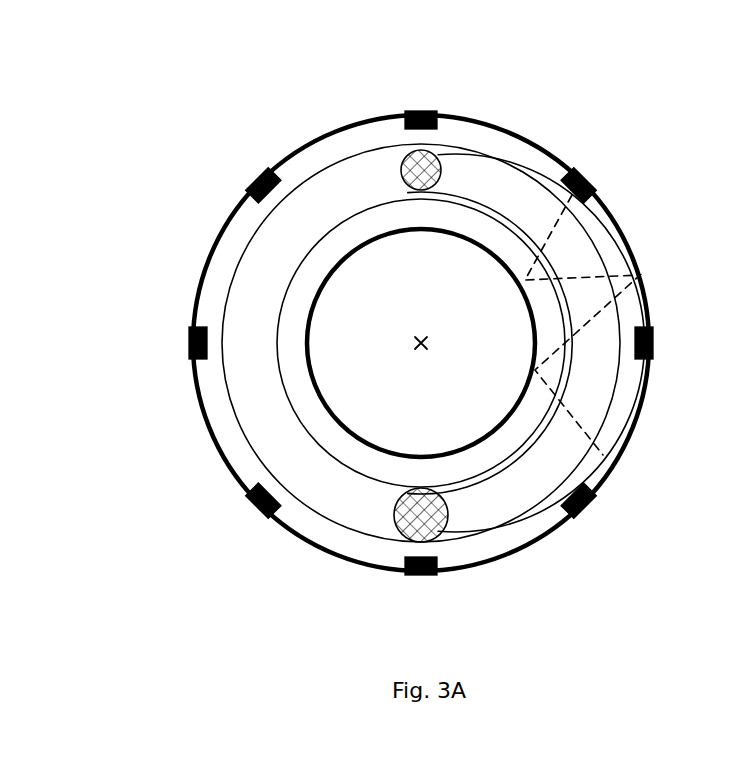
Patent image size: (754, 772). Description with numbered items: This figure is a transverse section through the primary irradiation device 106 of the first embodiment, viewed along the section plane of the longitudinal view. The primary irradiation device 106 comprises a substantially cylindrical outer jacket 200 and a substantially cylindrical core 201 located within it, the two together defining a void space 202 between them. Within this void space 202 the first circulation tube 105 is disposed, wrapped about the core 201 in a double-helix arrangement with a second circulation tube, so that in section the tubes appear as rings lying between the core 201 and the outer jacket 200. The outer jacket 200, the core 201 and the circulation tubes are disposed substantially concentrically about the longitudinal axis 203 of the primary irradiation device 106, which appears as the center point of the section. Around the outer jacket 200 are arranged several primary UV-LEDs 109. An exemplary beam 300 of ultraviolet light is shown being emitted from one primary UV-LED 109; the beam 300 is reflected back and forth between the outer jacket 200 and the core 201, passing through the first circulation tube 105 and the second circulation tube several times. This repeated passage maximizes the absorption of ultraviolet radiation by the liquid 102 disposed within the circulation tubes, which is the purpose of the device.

The primary irradiation device 106 is at (583, 88).
The primary UV-LED 109 is at (421, 110).
The liquid 102 is at (405, 158).
The first circulation tube 105 is at (343, 178).
The outer jacket 200 is at (640, 255).
The core 201 is at (317, 377).
The void space 202 is at (507, 536).
The longitudinal axis 203 is at (417, 350).
The beam 300 is at (583, 276).